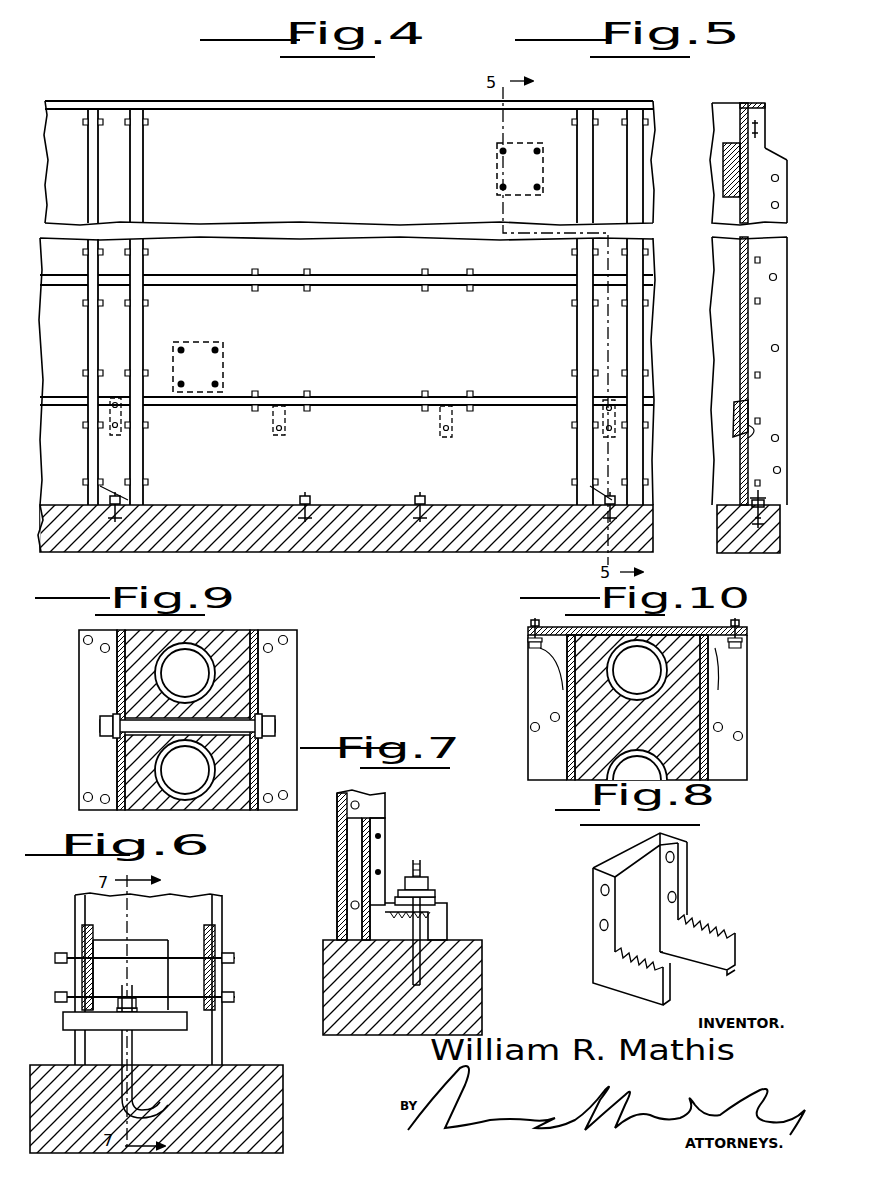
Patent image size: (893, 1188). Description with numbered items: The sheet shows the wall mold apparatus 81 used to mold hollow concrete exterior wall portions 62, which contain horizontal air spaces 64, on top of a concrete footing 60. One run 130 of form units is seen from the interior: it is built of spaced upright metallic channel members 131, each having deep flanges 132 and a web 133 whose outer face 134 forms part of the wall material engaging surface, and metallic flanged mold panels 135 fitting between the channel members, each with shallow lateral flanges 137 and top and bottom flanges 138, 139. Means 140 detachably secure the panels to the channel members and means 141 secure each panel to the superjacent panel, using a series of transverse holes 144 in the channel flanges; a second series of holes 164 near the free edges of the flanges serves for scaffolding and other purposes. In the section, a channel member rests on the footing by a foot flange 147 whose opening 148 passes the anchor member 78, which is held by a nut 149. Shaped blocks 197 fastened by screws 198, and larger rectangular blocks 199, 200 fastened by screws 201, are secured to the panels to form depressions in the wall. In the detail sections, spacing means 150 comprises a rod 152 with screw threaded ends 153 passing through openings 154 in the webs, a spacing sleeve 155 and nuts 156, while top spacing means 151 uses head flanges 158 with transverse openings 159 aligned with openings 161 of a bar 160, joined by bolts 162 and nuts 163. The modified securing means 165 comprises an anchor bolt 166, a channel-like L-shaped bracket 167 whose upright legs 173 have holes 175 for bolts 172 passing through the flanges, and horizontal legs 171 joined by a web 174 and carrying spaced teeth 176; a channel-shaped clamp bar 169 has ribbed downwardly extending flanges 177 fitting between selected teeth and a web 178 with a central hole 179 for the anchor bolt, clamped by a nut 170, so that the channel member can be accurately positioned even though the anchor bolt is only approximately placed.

In FIG. 4, the footing 60 is at (330, 522).
In FIG. 5, the footing 60 is at (735, 525).
In FIG. 6, the footing 60 is at (258, 1066).
In FIG. 7, the footing 60 is at (483, 938).
In FIG. 9, the hollow concrete exterior wall portion 62 is at (222, 643).
In FIG. 10, the hollow concrete exterior wall portion 62 is at (582, 750).
In FIG. 9, the horizontal air space 64 is at (196, 682).
In FIG. 10, the horizontal air space 64 is at (648, 679).
In FIG. 4, the anchor member 78 is at (305, 497).
In FIG. 5, the anchor member 78 is at (757, 495).
In FIG. 4, the wall mold apparatus 81 is at (62, 101).
In FIG. 4, the run of form units 130 is at (222, 112).
In FIG. 5, the run of form units 130 is at (758, 119).
In FIG. 4, the upright metallic channel member 131 is at (118, 162).
In FIG. 9, the upright metallic channel member 131 is at (79, 641).
In FIG. 10, the upright metallic channel member 131 is at (528, 712).
In FIG. 6, the upright metallic channel member 131 is at (205, 895).
In FIG. 7, the upright metallic channel member 131 is at (353, 793).
In FIG. 4, the flange of channel member 132 is at (122, 206).
In FIG. 6, the flange of channel member 132 is at (76, 1040).
In FIG. 7, the flange of channel member 132 is at (378, 812).
In FIG. 9, the web of channel member 133 is at (117, 640).
In FIG. 10, the web of channel member 133 is at (710, 722).
In FIG. 9, the outer face of web 134 is at (122, 656).
In FIG. 10, the outer face of web 134 is at (705, 700).
In FIG. 4, the flanged mold panel 135 is at (342, 174).
In FIG. 5, the flanged mold panel 135 is at (740, 326).
In FIG. 4, the lateral flange of panel 137 is at (82, 140).
In FIG. 4, the top flange of panel 138 is at (345, 286).
In FIG. 4, the bottom flange of panel 139 is at (343, 397).
In FIG. 4, the means for securing panels to channel members 140 is at (143, 426).
In FIG. 4, the means for securing panel to superjacent panel 141 is at (248, 390).
In FIG. 9, the transverse hole 144 is at (265, 652).
In FIG. 10, the transverse hole 144 is at (745, 756).
In FIG. 7, the transverse hole 144 is at (348, 818).
In FIG. 4, the foot flange 147 is at (115, 496).
In FIG. 5, the foot flange 147 is at (780, 502).
In FIG. 5, the opening in foot flange 148 is at (762, 494).
In FIG. 5, the nut 149 is at (774, 468).
In FIG. 9, the spacing means 150 is at (266, 722).
In FIG. 10, the top spacing means 151 is at (748, 628).
In FIG. 9, the rod 152 is at (100, 726).
In FIG. 9, the screw threaded end of rod 153 is at (100, 733).
In FIG. 9, the opening in web 154 is at (116, 714).
In FIG. 9, the spacing sleeve 155 is at (266, 740).
In FIG. 9, the nut 156 is at (110, 720).
In FIG. 10, the head flange 158 is at (637, 669).
In FIG. 10, the transverse opening in head flange 159 is at (533, 683).
In FIG. 10, the bar 160 is at (655, 628).
In FIG. 10, the transverse opening in bar 161 is at (532, 626).
In FIG. 10, the bolt 162 is at (540, 648).
In FIG. 10, the nut 163 is at (530, 642).
In FIG. 5, the transverse hole 164 is at (778, 322).
In FIG. 9, the transverse hole 164 is at (84, 797).
In FIG. 10, the transverse hole 164 is at (531, 730).
In FIG. 6, the transverse hole 164 is at (80, 948).
In FIG. 7, the transverse hole 164 is at (352, 801).
In FIG. 6, the modified securing means 165 is at (148, 945).
In FIG. 7, the modified securing means 165 is at (392, 823).
In FIG. 6, the anchor bolt 166 is at (137, 1040).
In FIG. 7, the anchor bolt 166 is at (432, 922).
In FIG. 6, the L-shaped bracket 167 is at (163, 940).
In FIG. 7, the L-shaped bracket 167 is at (388, 833).
In FIG. 8, the L-shaped bracket 167 is at (688, 840).
In FIG. 6, the clamp bar 169 is at (78, 1000).
In FIG. 7, the clamp bar 169 is at (430, 886).
In FIG. 6, the nut 170 is at (131, 990).
In FIG. 7, the nut 170 is at (424, 872).
In FIG. 6, the horizontal leg of bracket 171 is at (86, 1056).
In FIG. 7, the horizontal leg of bracket 171 is at (440, 934).
In FIG. 8, the horizontal leg of bracket 171 is at (706, 965).
In FIG. 6, the bolt 172 is at (184, 976).
In FIG. 7, the bolt 172 is at (388, 851).
In FIG. 7, the upright leg of bracket 173 is at (390, 878).
In FIG. 8, the upright leg of bracket 173 is at (690, 878).
In FIG. 8, the web of bracket 174 is at (628, 858).
In FIG. 8, the transverse hole in upright leg 175 is at (600, 891).
In FIG. 8, the teeth 176 is at (706, 926).
In FIG. 7, the flange of clamp bar 177 is at (437, 901).
In FIG. 6, the web of clamp bar 178 is at (120, 990).
In FIG. 6, the transverse hole in clamp bar web 179 is at (106, 1031).
In FIG. 4, the block 197 is at (285, 421).
In FIG. 5, the block 197 is at (736, 384).
In FIG. 4, the screw 198 is at (270, 435).
In FIG. 5, the screw 198 is at (748, 396).
In FIG. 4, the rectangular block 199 is at (225, 357).
In FIG. 4, the rectangular block 200 is at (497, 177).
In FIG. 5, the rectangular block 200 is at (748, 178).
In FIG. 4, the screw 201 is at (537, 150).
In FIG. 5, the screw 201 is at (736, 150).